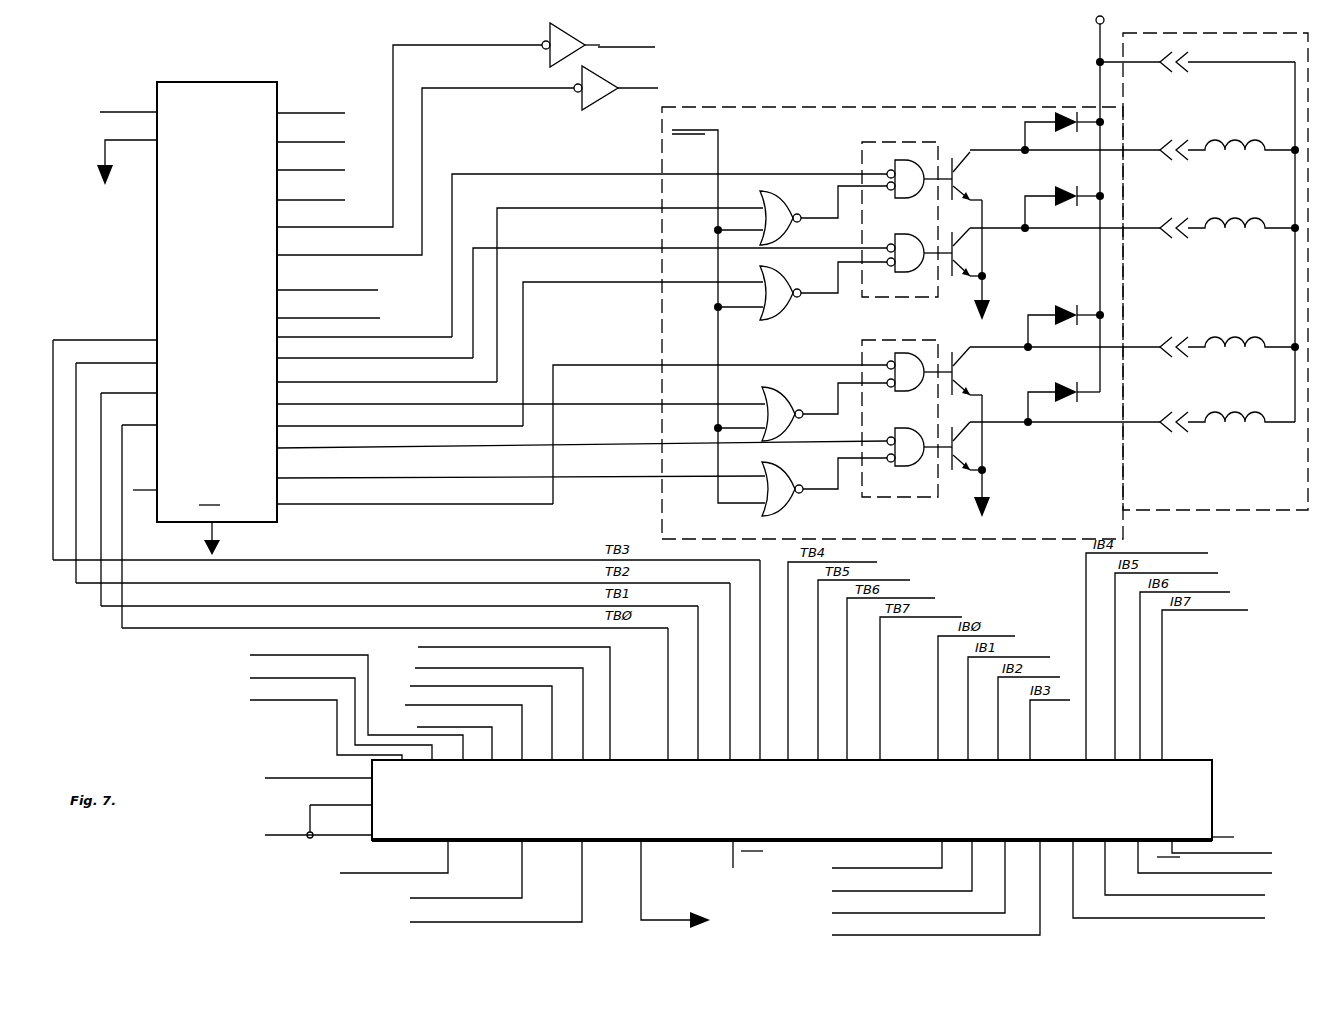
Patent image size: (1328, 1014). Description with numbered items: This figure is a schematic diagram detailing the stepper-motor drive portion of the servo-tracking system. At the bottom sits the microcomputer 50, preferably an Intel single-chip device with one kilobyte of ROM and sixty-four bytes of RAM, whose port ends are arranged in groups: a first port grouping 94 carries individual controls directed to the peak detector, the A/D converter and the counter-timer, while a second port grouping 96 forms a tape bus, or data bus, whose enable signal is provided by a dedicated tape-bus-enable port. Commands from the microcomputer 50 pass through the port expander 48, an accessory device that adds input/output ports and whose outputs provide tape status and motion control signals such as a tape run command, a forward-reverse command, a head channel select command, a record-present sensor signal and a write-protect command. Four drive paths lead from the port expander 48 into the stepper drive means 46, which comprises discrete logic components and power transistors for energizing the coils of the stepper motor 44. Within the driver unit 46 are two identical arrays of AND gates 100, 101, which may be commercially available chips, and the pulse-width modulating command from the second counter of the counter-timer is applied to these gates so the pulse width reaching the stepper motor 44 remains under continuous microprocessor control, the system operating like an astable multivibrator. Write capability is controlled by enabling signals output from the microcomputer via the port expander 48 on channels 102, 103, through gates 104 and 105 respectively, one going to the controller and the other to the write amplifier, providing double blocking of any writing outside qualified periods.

The stepper motor 44 is at (1258, 26).
The stepper drive means 46 is at (986, 94).
The port expander 48 is at (222, 265).
The microcomputer 50 is at (822, 818).
The first port grouping 94 is at (404, 672).
The tape bus port grouping 96 is at (962, 575).
The array of AND gates 100 is at (890, 138).
The array of AND gates 101 is at (900, 497).
The channel 102 is at (468, 48).
The channel 103 is at (488, 88).
The gate 104 is at (558, 40).
The gate 105 is at (580, 97).